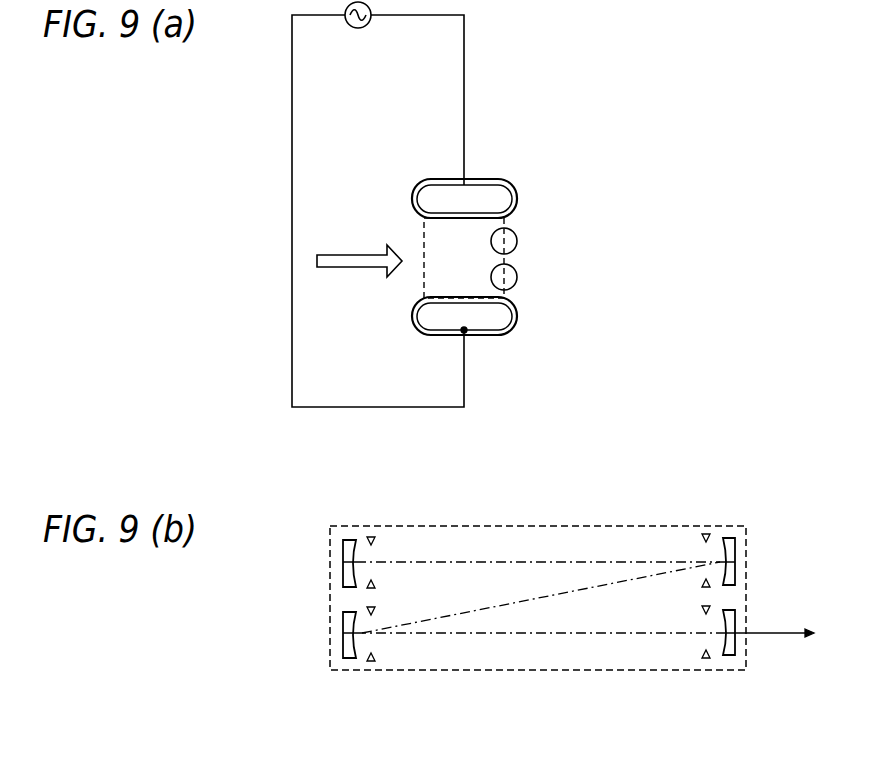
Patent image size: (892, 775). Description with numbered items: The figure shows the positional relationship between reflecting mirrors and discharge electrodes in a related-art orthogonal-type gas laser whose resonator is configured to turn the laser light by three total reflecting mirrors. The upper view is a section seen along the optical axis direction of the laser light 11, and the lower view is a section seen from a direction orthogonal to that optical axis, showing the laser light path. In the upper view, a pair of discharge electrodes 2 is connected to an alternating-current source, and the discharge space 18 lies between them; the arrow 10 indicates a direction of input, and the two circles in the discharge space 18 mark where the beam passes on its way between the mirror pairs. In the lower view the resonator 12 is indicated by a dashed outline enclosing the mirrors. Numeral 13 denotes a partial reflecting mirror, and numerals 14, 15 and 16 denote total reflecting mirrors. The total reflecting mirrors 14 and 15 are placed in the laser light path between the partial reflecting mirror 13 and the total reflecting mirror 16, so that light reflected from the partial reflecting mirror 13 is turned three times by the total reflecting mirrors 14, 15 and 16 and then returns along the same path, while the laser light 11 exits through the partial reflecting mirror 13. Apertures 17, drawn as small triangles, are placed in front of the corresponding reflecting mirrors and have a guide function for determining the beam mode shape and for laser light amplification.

The electrode 2 is at (480, 182).
The excitation input 10 is at (347, 253).
In FIG. 9b, the laser light 11 is at (780, 631).
In FIG. 9b, the resonator 12 is at (542, 525).
The partial reflecting mirror 13 is at (551, 277).
In FIG. 9b, the partial reflecting mirror 13 is at (737, 641).
The total reflecting mirror 14 is at (517, 277).
In FIG. 9b, the total reflecting mirror 14 is at (343, 633).
The total reflecting mirror 15 is at (551, 241).
In FIG. 9b, the total reflecting mirror 15 is at (737, 559).
The total reflecting mirror 16 is at (517, 241).
In FIG. 9b, the total reflecting mirror 16 is at (343, 562).
In FIG. 9b, the aperture 17 is at (373, 534).
The discharge space 18 is at (423, 240).